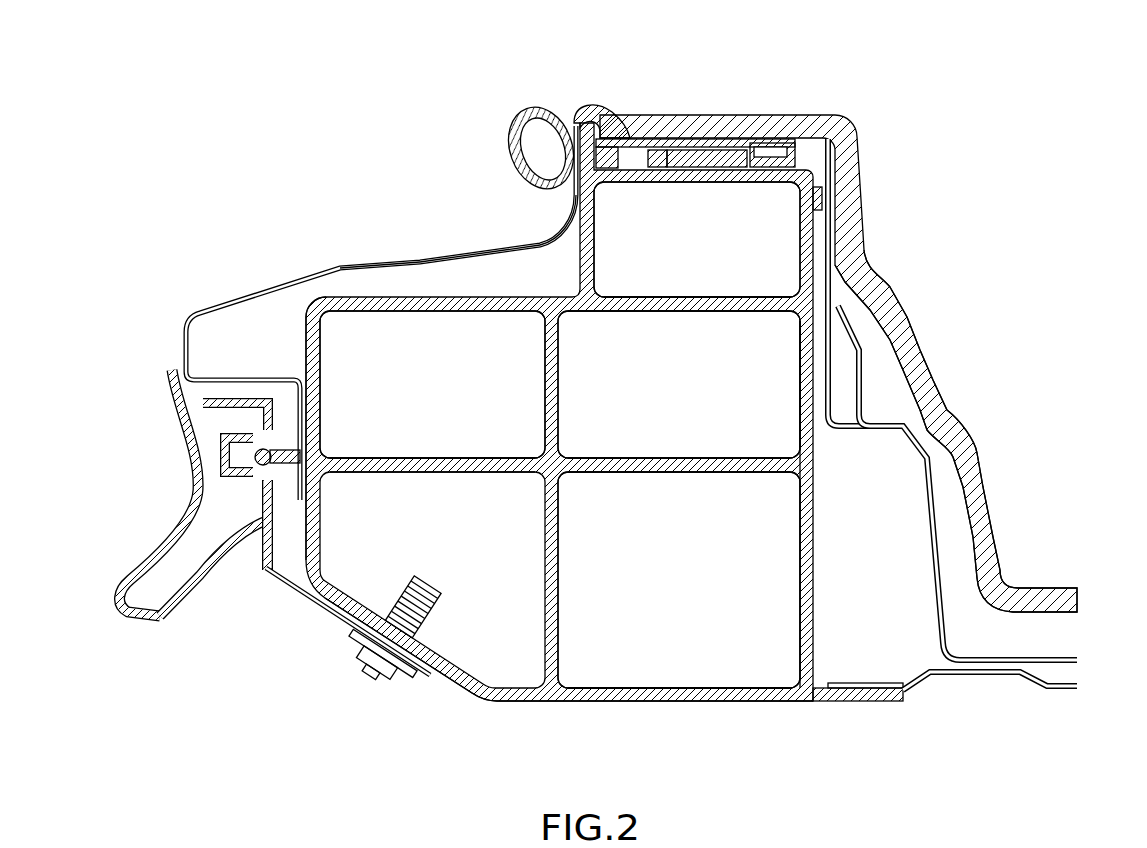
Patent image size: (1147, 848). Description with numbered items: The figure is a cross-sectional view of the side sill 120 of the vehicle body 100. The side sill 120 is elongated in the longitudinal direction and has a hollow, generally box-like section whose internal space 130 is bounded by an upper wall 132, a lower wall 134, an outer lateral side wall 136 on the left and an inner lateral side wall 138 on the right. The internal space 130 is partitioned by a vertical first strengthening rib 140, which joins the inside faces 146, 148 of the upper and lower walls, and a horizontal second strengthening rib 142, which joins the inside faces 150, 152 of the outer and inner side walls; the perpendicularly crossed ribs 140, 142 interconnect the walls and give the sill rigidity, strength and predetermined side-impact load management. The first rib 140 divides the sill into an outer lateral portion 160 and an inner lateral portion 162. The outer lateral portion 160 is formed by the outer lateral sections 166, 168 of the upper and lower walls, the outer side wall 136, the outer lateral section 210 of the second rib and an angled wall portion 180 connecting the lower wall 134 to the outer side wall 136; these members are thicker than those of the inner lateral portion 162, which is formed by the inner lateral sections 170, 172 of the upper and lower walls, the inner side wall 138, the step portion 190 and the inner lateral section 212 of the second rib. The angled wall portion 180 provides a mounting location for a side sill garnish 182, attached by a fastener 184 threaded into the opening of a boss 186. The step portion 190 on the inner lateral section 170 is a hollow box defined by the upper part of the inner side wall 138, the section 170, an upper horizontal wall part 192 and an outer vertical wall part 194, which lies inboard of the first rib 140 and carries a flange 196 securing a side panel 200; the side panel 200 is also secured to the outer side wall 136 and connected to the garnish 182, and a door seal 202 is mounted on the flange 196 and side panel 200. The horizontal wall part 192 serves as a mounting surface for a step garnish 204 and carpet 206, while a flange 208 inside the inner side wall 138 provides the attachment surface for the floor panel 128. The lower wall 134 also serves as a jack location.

The vehicle body 100 is at (947, 112).
The side sill 120 is at (727, 722).
The floor panel 128 is at (1063, 700).
The internal space 130 is at (407, 333).
The upper wall 132 is at (495, 297).
The lower wall 134 is at (773, 702).
The outer lateral side wall 136 is at (305, 343).
The inner lateral side wall 138 is at (812, 548).
The first strengthening rib 140 is at (557, 403).
The second strengthening rib 142 is at (685, 472).
The inside face of the upper wall 146 is at (645, 312).
The inside face of the lower wall 148 is at (677, 688).
The inside face of the outer lateral side wall 150 is at (320, 402).
The inside face of the inner lateral side wall 152 is at (800, 402).
The outer lateral portion 160 is at (440, 690).
The inner lateral portion 162 is at (677, 717).
The outer lateral section of the upper wall 166 is at (452, 297).
The outer lateral section of the lower wall 168 is at (513, 702).
The inner lateral section of the upper wall 170 is at (693, 297).
The inner lateral section of the lower wall 172 is at (748, 688).
The angled wall portion 180 is at (453, 657).
The side sill garnish 182 is at (295, 593).
The fastener 184 is at (370, 673).
The boss 186 is at (397, 597).
The step portion 190 is at (560, 272).
The upper horizontal wall part 192 is at (693, 182).
The outer vertical wall part 194 is at (593, 233).
The flange 196 is at (594, 120).
The side panel 200 is at (340, 267).
The door seal 202 is at (532, 117).
The step garnish 204 is at (762, 128).
The carpet 206 is at (945, 400).
The flange 208 is at (885, 700).
The outer lateral section of the second rib 210 is at (420, 457).
The inner lateral section of the second rib 212 is at (672, 458).